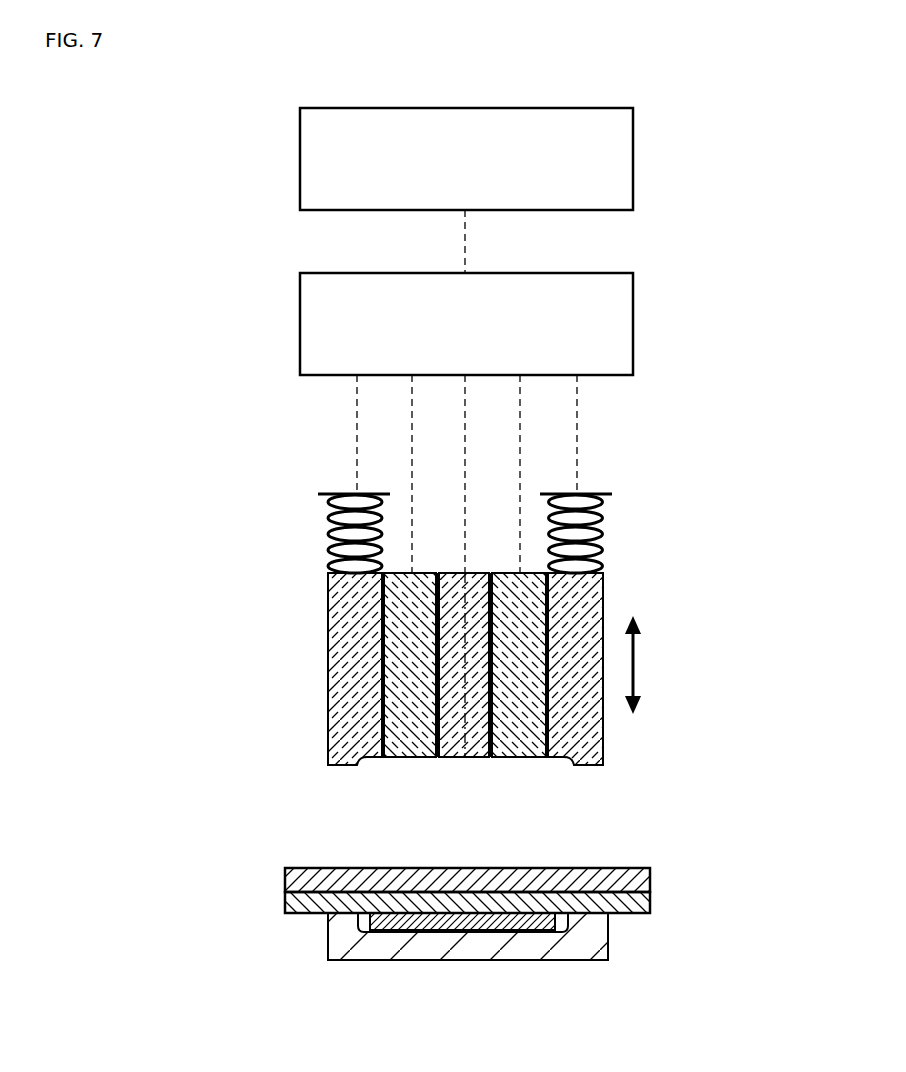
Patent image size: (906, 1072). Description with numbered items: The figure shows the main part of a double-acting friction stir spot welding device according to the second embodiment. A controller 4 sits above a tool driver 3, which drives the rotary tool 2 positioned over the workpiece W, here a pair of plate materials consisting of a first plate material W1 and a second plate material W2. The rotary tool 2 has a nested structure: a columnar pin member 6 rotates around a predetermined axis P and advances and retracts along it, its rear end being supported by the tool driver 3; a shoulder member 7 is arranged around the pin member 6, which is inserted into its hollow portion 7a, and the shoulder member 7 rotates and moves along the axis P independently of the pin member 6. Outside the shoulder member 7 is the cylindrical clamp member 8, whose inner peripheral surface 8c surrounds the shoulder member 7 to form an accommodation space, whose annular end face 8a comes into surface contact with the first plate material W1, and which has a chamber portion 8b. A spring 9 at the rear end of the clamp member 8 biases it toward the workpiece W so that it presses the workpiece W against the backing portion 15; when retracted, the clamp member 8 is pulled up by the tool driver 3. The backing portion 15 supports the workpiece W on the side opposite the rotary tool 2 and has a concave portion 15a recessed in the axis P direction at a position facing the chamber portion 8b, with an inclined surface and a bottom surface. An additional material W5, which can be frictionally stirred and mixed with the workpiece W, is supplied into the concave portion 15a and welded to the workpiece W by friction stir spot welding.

The controller 4 is at (636, 158).
The tool driver 3 is at (636, 322).
The rotary tool 2 is at (482, 664).
The spring 9 is at (335, 528).
The clamp member 8 is at (340, 597).
The end face 8a is at (345, 766).
The chamber portion 8b is at (362, 758).
The inner peripheral surface 8c is at (380, 629).
The shoulder member 7 is at (395, 665).
The hollow portion 7a is at (435, 686).
The pin member 6 is at (452, 719).
The axis P is at (465, 640).
The workpiece W is at (533, 896).
The first plate material W1 is at (651, 877).
The second plate material W2 is at (651, 903).
The additional material W5 is at (510, 932).
The backing portion 15 is at (608, 937).
The concave portion 15a is at (358, 935).